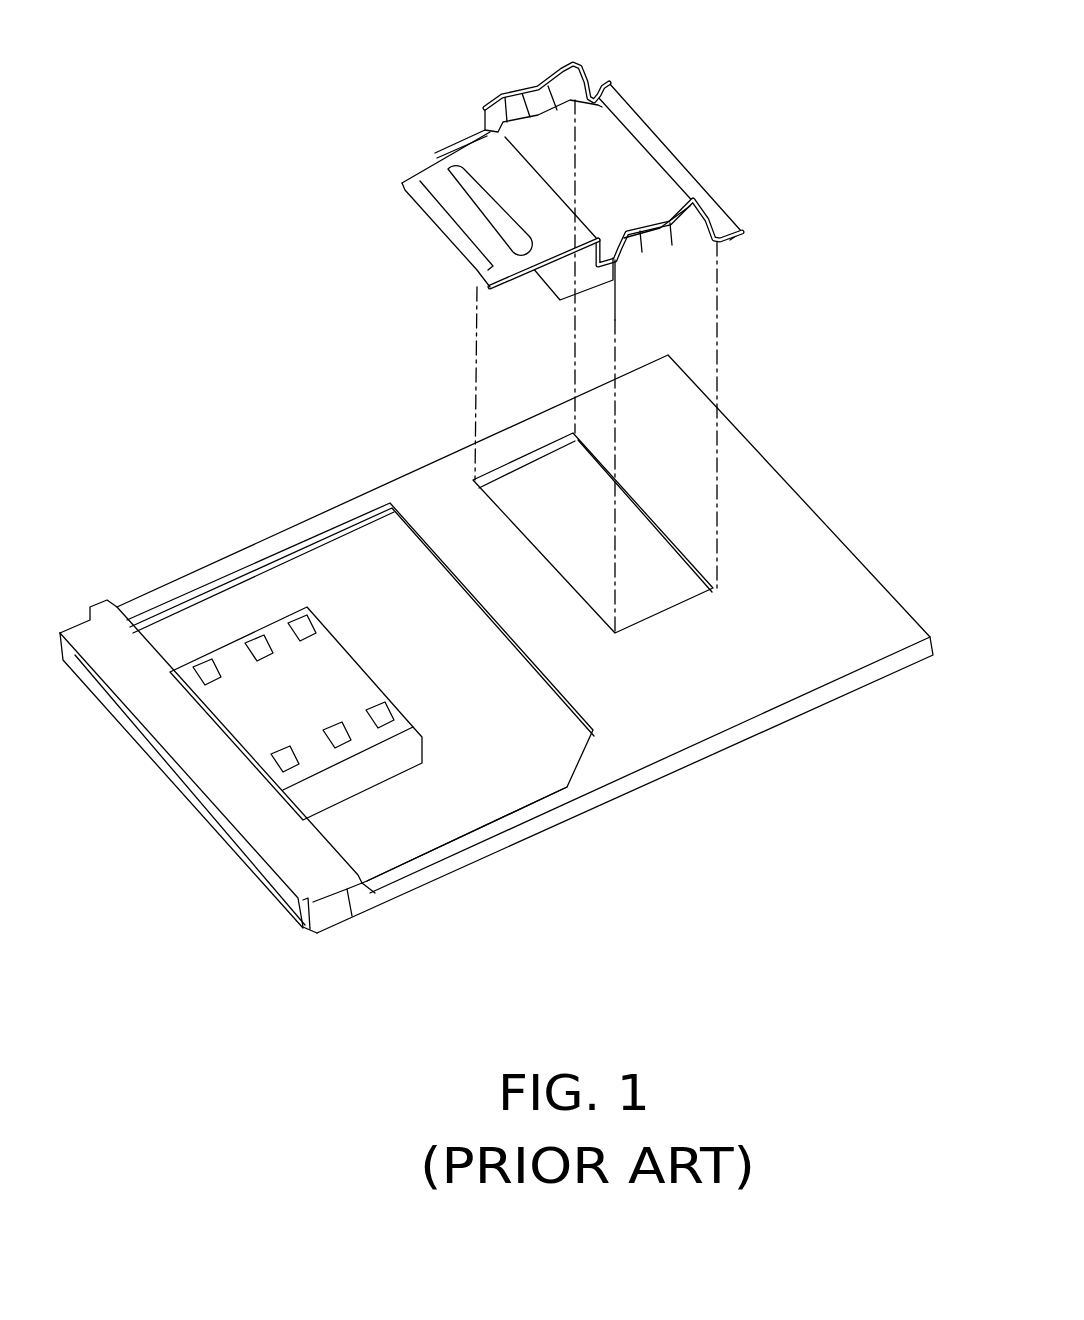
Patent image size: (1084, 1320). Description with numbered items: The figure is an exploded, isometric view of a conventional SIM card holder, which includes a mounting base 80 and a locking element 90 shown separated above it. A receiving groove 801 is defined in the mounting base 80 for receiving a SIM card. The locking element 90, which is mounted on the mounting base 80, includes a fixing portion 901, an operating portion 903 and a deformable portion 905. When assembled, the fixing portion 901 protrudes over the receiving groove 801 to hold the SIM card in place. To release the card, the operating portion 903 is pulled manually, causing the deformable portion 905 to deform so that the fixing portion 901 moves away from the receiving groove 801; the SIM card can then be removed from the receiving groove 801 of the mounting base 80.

The mounting base 80 is at (712, 786).
The receiving groove 801 is at (478, 787).
The locking element 90 is at (613, 77).
The fixing portion 901 is at (435, 182).
The operating portion 903 is at (477, 202).
The deformable portion 905 is at (567, 80).